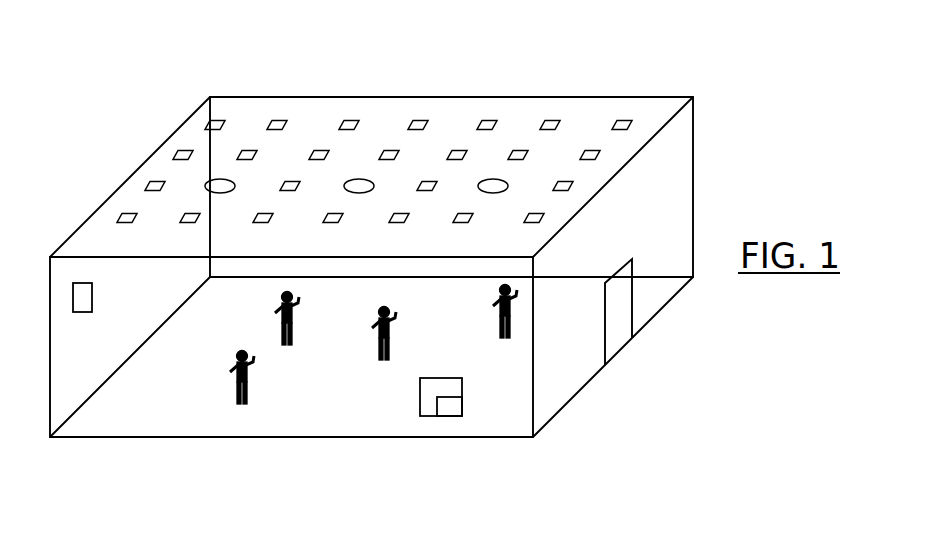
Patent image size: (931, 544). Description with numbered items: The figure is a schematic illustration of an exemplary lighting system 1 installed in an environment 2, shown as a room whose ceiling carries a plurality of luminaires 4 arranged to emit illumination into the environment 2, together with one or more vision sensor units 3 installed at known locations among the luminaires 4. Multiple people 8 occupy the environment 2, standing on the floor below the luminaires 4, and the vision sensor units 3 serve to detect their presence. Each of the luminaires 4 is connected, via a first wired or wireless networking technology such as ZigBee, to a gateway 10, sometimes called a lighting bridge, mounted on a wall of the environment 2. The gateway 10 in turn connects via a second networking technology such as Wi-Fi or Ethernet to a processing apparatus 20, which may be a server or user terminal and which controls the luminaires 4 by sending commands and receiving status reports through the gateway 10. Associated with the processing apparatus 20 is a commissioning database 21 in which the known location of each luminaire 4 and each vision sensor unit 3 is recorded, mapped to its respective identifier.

The lighting system 1 is at (680, 64).
The environment 2 is at (570, 97).
The vision sensor unit 3 is at (359, 179).
The luminaire 4 is at (455, 150).
The people 8 is at (235, 371).
The gateway 10 is at (93, 291).
The processing apparatus 20 is at (440, 378).
The commissioning database 21 is at (447, 417).